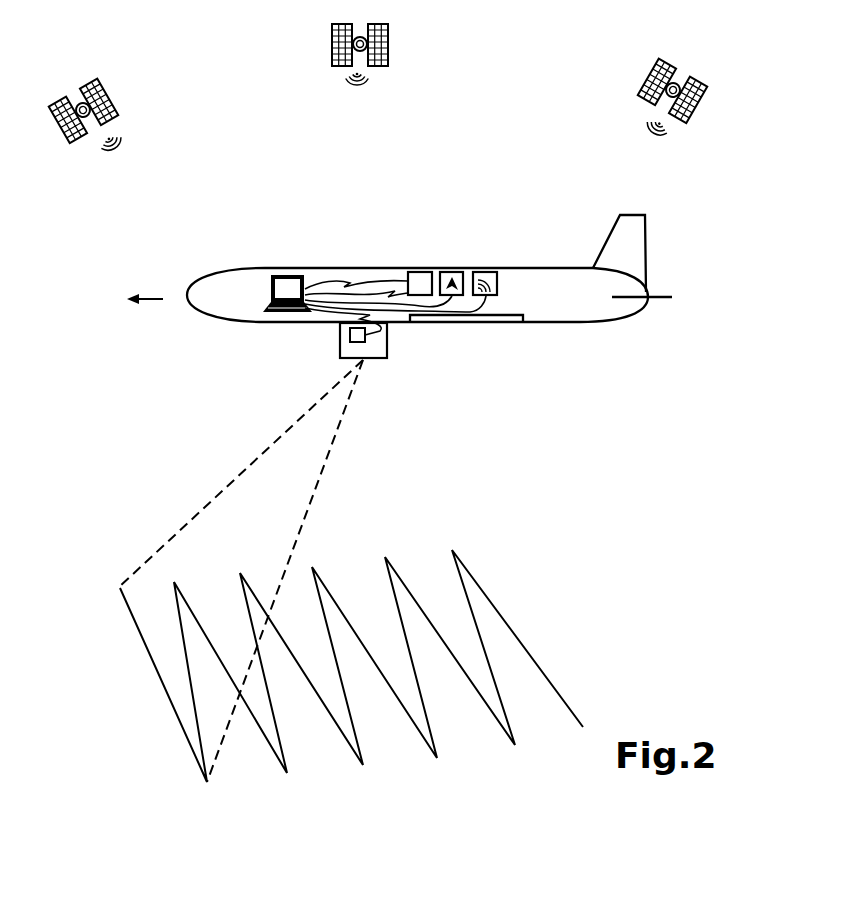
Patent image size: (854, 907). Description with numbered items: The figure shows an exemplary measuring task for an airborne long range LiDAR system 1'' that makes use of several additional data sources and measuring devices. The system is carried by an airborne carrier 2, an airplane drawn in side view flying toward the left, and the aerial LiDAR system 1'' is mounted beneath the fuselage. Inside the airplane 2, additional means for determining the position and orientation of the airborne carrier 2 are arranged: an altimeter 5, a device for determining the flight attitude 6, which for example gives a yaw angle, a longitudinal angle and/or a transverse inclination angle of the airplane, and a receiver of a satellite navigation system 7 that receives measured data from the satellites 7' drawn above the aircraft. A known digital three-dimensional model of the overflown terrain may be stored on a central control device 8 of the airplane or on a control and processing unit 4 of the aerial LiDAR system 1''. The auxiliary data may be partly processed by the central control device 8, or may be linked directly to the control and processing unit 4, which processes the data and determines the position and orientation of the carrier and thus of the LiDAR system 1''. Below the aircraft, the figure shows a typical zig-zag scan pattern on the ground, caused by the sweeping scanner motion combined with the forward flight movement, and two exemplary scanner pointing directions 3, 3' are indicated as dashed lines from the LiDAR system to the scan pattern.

The airborne carrier 2 is at (399, 250).
The central control device 8 is at (374, 260).
The altimeter 5 is at (449, 241).
The device for determining the flight attitude 6 is at (503, 241).
The satellite navigation system 7 is at (537, 340).
The satellite navigation system satellites 7' is at (398, 95).
The control and processing unit 4 is at (316, 356).
The airborne long range LiDAR system 1'' is at (427, 397).
The scanner pointing direction 3 is at (350, 571).
The scanner pointing direction 3' is at (325, 571).